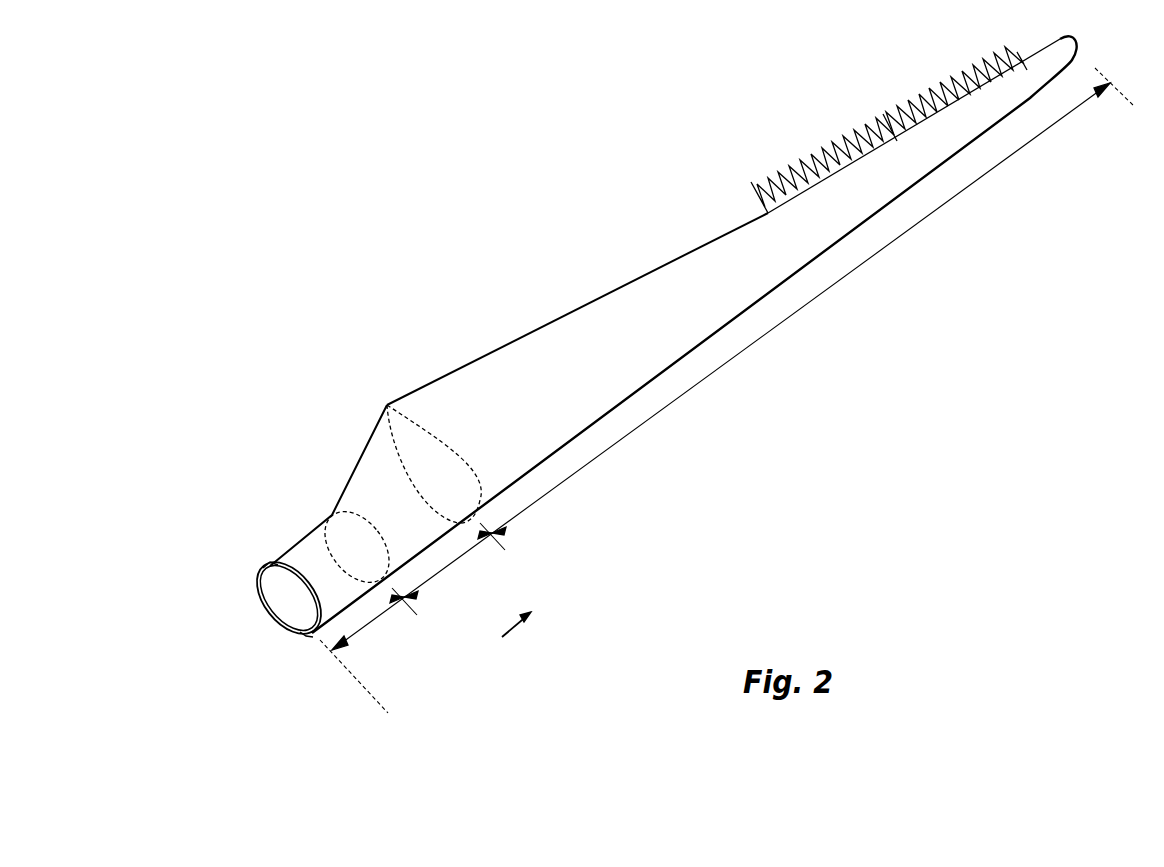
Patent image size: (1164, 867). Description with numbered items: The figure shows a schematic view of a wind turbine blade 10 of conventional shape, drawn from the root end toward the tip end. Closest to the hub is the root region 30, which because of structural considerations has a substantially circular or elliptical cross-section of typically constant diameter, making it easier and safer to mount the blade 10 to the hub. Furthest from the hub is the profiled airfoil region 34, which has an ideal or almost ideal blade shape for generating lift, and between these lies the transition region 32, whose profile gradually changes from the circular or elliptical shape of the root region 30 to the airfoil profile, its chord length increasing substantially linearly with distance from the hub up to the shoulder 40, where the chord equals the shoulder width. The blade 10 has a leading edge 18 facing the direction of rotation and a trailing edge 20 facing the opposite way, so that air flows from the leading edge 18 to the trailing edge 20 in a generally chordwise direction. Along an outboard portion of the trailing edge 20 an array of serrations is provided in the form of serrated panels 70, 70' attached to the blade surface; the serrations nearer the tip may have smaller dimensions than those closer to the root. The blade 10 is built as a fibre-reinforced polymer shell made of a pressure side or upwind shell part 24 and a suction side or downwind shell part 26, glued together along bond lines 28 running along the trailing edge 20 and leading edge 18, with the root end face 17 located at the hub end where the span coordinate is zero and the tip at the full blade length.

The wind turbine blade 10 is at (525, 232).
The root end face 17 is at (280, 587).
The leading edge 18 is at (827, 250).
The trailing edge 20 is at (720, 222).
The pressure side or upwind shell part 24 is at (282, 562).
The suction side or downwind shell part 26 is at (292, 632).
The bond lines 28 is at (271, 565).
The root region 30 is at (368, 627).
The transition region 32 is at (448, 567).
The airfoil region 34 is at (737, 355).
The shoulder 40 is at (387, 405).
The serrated panel 70 is at (956, 80).
The serrated panel 70' is at (824, 135).